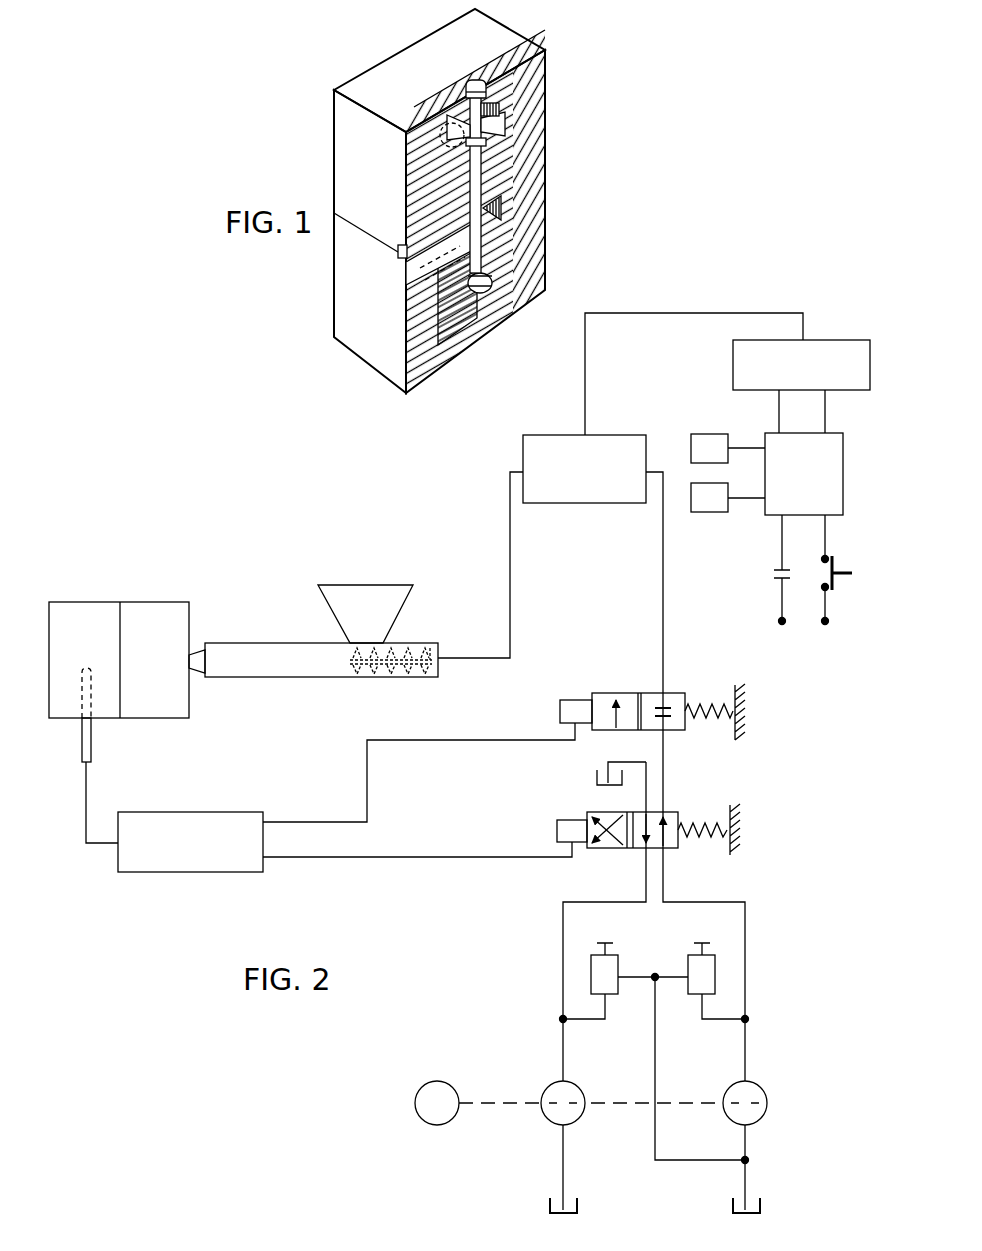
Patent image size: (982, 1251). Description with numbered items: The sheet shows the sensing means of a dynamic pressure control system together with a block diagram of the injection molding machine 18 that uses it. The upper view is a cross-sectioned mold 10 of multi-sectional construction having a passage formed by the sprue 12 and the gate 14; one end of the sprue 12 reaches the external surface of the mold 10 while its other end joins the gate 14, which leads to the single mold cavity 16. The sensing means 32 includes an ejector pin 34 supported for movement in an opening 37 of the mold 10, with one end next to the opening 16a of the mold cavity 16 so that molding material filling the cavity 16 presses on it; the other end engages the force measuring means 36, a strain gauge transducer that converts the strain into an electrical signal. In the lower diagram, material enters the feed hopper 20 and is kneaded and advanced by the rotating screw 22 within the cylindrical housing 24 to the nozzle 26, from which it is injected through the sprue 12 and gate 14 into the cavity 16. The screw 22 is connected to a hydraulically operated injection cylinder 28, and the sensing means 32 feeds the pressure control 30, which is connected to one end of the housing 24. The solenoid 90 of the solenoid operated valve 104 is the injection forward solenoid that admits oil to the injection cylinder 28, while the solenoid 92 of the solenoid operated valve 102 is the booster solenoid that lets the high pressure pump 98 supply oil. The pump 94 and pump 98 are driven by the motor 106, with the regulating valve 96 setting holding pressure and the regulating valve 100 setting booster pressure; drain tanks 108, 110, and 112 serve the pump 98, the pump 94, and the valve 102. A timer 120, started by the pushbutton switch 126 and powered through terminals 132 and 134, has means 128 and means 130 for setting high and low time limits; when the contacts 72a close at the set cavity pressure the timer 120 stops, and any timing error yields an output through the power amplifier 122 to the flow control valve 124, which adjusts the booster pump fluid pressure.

In FIG. 1, the mold 10 is at (396, 47).
In FIG. 2, the mold 10 is at (148, 598).
In FIG. 1, the sprue 12 is at (471, 80).
In FIG. 1, the gate 14 is at (468, 105).
In FIG. 1, the mold cavity 16 is at (499, 106).
In FIG. 1, the opening 16a is at (455, 122).
In FIG. 1, the opening 37 is at (483, 170).
In FIG. 1, the ejector pin 34 is at (483, 222).
In FIG. 1, the force measuring means 36 is at (488, 297).
In FIG. 2, the injection molding machine 18 is at (273, 748).
In FIG. 2, the feed hopper 20 is at (378, 616).
In FIG. 2, the screw 22 is at (408, 648).
In FIG. 2, the cylindrical housing 24 is at (278, 643).
In FIG. 2, the nozzle 26 is at (198, 652).
In FIG. 2, the injection cylinder 28 is at (426, 672).
In FIG. 2, the pressure control 30 is at (183, 875).
In FIG. 2, the sensing means 32 is at (93, 740).
In FIG. 2, the contacts 72a is at (774, 574).
In FIG. 2, the solenoid 90 is at (567, 696).
In FIG. 2, the solenoid 92 is at (565, 818).
In FIG. 2, the pump 94 is at (768, 1091).
In FIG. 2, the regulating valve 96 is at (688, 997).
In FIG. 2, the high pressure pump 98 is at (546, 1090).
In FIG. 2, the regulating valve 100 is at (616, 996).
In FIG. 2, the solenoid operated valve 102 is at (699, 806).
In FIG. 2, the solenoid operated valve 104 is at (704, 695).
In FIG. 2, the motor 106 is at (441, 1080).
In FIG. 2, the drain tank 108 is at (548, 1205).
In FIG. 2, the drain tank 110 is at (731, 1205).
In FIG. 2, the drain tank 112 is at (597, 777).
In FIG. 2, the timer 120 is at (762, 517).
In FIG. 2, the power amplifier 122 is at (824, 338).
In FIG. 2, the flow control valve 124 is at (584, 507).
In FIG. 2, the pushbutton switch 126 is at (838, 563).
In FIG. 2, the high time limit setting means 128 is at (709, 431).
In FIG. 2, the low time limit setting means 130 is at (718, 516).
In FIG. 2, the terminal 132 is at (781, 626).
In FIG. 2, the terminal 134 is at (824, 626).